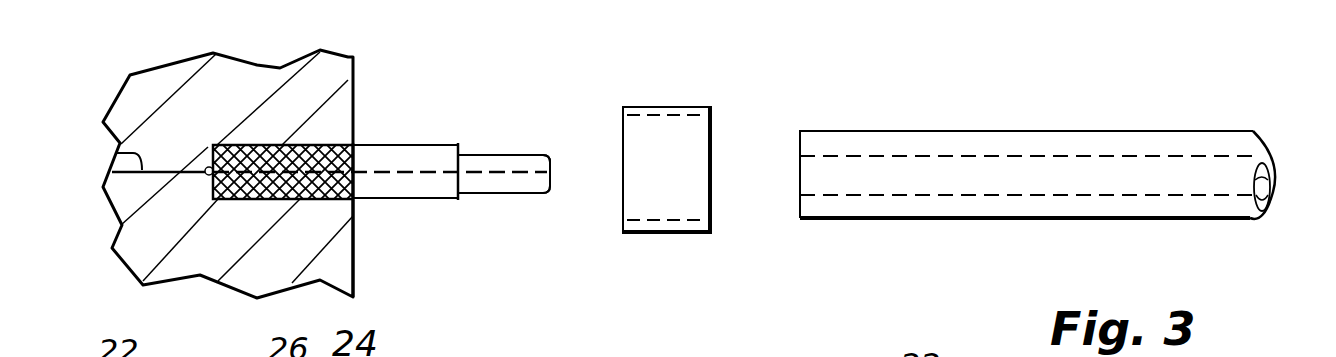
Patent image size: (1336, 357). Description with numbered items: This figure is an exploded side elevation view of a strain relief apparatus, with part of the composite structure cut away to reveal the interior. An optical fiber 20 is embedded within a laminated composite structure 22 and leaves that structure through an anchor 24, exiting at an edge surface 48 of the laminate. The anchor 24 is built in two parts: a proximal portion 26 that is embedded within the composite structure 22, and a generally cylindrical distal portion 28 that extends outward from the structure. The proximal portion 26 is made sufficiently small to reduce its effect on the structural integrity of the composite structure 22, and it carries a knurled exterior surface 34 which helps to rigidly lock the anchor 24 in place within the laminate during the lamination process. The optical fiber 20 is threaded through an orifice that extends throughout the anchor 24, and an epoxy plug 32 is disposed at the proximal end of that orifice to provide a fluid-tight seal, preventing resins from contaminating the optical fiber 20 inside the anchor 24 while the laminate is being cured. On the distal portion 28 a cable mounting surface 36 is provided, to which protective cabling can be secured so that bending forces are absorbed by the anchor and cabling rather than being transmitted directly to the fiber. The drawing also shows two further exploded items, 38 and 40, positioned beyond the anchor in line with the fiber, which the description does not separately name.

The optical fiber 20 is at (115, 151).
The laminated composite structure 22 is at (148, 89).
The anchor 24 is at (404, 130).
The proximal portion 26 is at (363, 138).
The distal portion 28 is at (556, 146).
The epoxy plug 32 is at (206, 166).
The knurled exterior surface 34 is at (268, 142).
The cable mounting surface 36 is at (508, 152).
The pin 38 is at (978, 110).
The spacer 40 is at (672, 105).
The edge surface 48 is at (355, 245).